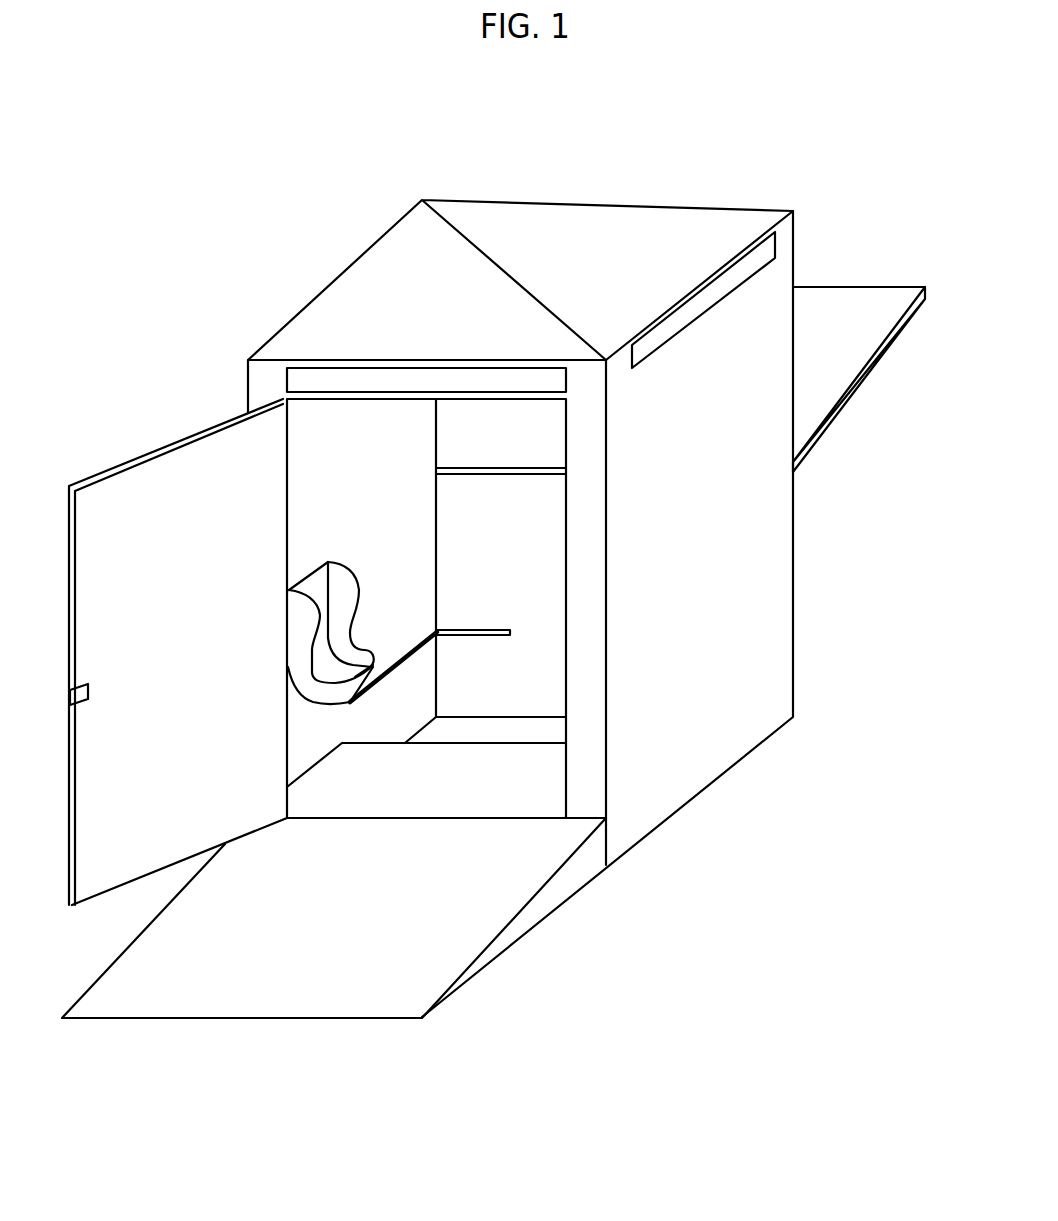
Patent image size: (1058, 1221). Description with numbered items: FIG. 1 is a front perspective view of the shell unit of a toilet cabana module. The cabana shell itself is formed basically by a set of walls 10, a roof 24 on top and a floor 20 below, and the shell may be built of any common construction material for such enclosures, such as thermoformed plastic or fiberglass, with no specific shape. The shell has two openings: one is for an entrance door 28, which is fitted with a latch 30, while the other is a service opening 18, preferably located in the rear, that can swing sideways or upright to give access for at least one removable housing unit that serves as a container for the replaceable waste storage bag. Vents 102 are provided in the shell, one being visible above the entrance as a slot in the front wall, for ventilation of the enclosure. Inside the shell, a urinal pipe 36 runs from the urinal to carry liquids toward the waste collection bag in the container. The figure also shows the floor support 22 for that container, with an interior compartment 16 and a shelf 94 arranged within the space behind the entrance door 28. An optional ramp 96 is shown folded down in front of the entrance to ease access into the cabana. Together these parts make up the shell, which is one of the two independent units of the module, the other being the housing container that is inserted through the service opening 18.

The set of walls 10 is at (793, 585).
The storage compartment 16 is at (463, 590).
The service opening 18 is at (830, 433).
The floor 20 is at (353, 795).
The floor support 22 is at (497, 728).
The roof 24 is at (423, 235).
The entrance door 28 is at (208, 752).
The latch 30 is at (95, 678).
The urinal pipe 36 is at (411, 640).
The upper shelf 94 is at (522, 633).
The ramp 96 is at (465, 933).
The vents 102 is at (337, 382).